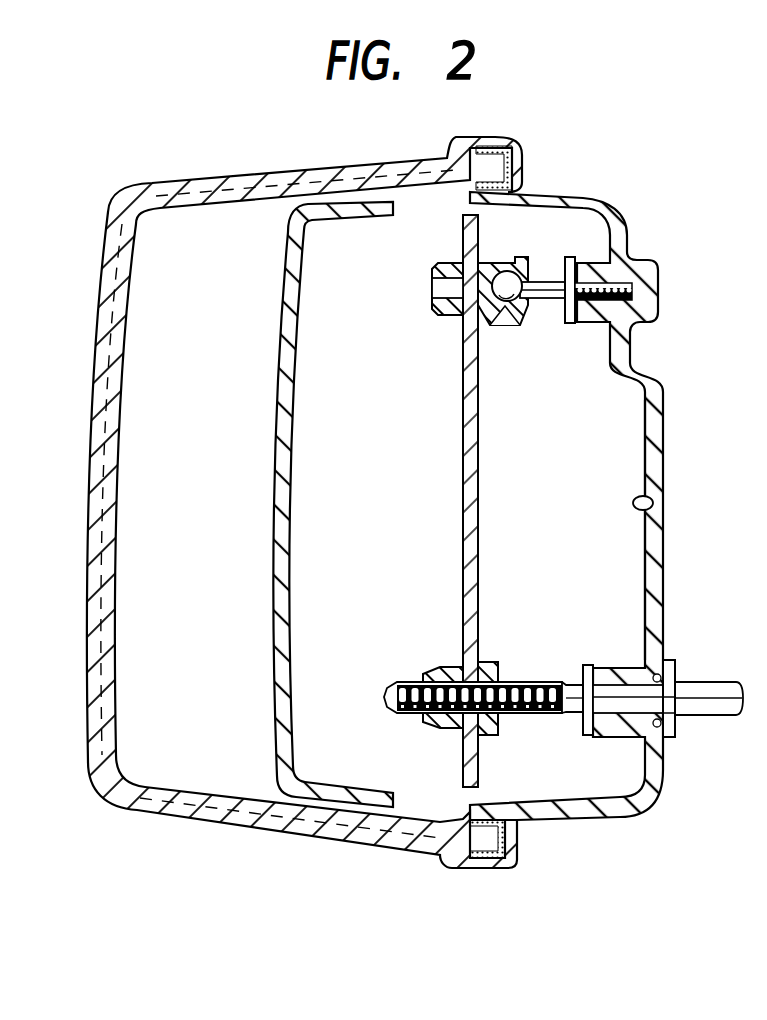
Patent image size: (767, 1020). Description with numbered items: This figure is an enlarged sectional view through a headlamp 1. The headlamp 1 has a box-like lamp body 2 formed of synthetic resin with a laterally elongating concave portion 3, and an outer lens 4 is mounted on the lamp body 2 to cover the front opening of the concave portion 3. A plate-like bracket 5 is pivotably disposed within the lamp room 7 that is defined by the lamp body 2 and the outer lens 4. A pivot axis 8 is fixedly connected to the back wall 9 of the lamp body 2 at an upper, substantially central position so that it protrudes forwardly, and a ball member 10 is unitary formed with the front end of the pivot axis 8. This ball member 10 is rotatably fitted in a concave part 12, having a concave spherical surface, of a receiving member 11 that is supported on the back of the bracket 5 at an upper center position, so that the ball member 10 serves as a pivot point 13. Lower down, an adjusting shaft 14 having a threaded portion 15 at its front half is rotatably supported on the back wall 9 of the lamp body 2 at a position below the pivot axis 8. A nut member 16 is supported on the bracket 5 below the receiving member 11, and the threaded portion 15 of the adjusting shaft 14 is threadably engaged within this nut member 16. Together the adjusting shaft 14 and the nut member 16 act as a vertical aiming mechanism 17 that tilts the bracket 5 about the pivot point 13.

The headlamp 1 is at (131, 172).
The lamp body 2 is at (589, 506).
The concave portion 3 is at (655, 504).
The outer lens 4 is at (100, 340).
The bracket 5 is at (462, 392).
The lamp room 7 is at (385, 509).
The pivot axis 8 is at (548, 287).
The back wall 9 is at (648, 452).
The ball member 10 is at (507, 280).
The receiving member 11 is at (519, 330).
The concave part 12 is at (502, 326).
The pivot point 13 is at (532, 261).
The adjusting shaft 14 is at (705, 688).
The threaded portion 15 is at (546, 682).
The nut member 16 is at (504, 662).
The vertical aiming mechanism 17 is at (563, 728).